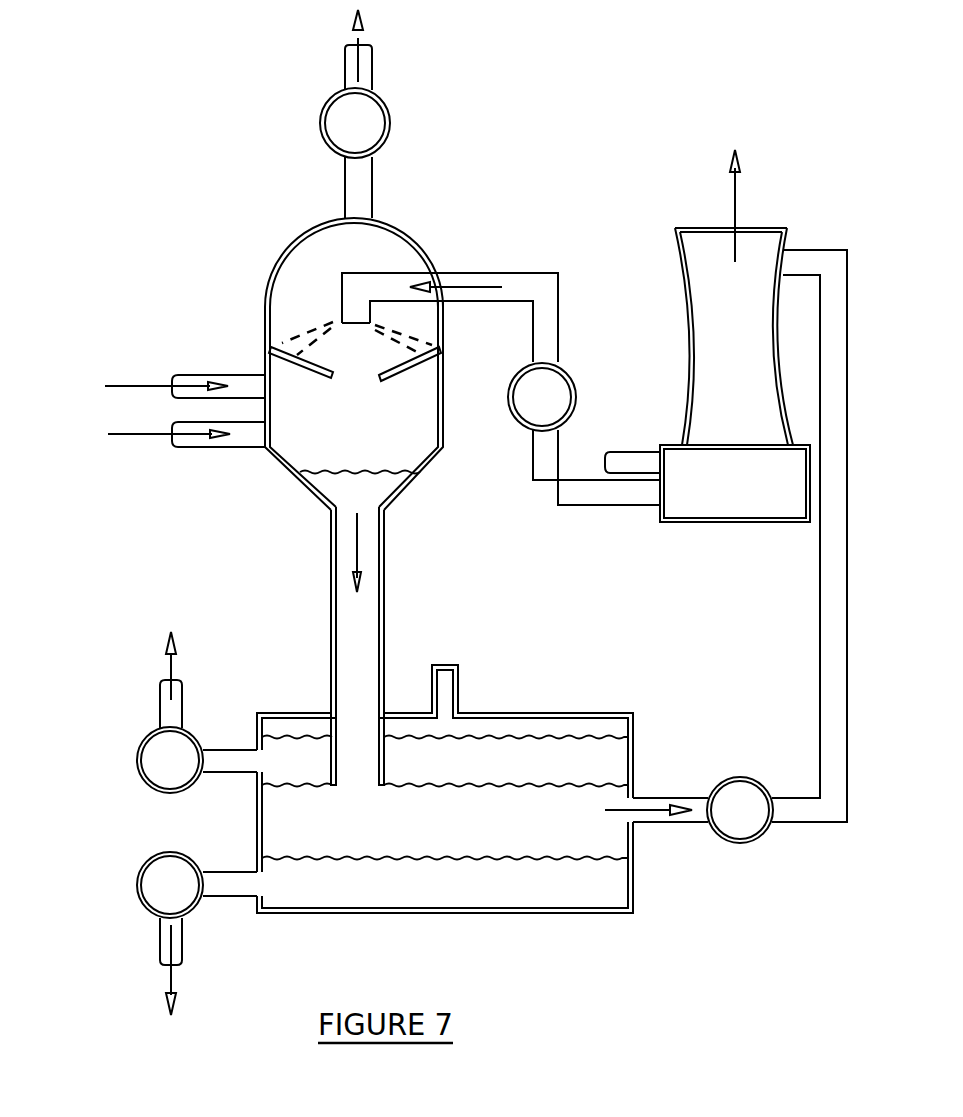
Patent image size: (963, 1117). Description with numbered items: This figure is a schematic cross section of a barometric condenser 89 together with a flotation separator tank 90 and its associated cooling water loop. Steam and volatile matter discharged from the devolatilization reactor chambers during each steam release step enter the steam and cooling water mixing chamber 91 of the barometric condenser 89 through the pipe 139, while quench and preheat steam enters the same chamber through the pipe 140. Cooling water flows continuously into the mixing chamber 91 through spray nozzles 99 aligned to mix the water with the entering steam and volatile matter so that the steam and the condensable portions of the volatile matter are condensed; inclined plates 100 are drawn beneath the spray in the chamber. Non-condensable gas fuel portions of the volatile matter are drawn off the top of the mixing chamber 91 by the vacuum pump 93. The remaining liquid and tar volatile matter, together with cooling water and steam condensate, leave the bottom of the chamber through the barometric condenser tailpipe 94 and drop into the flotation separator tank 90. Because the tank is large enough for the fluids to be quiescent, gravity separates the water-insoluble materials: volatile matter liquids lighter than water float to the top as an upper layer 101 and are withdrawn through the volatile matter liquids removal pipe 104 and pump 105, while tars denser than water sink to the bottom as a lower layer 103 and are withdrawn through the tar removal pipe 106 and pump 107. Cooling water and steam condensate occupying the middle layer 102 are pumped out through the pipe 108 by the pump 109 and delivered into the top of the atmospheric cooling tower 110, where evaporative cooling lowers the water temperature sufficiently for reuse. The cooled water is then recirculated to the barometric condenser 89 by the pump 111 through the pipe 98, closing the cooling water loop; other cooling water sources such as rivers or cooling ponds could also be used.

The barometric condenser 89 is at (432, 457).
The flotation separator tank 90 is at (600, 913).
The steam and cooling water mixing chamber 91 is at (300, 312).
The vacuum pump 93 is at (375, 127).
The barometric condenser tailpipe 94 is at (357, 607).
The pipe 98 is at (450, 290).
The spray nozzle 99 is at (355, 315).
The baffle plates 100 is at (415, 366).
The upper liquid layer 101 is at (527, 757).
The middle layer 102 is at (562, 822).
The lower liquid layer 103 is at (428, 893).
The volatile matter liquids removal pipe 104 is at (225, 752).
The pump 105 is at (152, 738).
The tar removal pipe 106 is at (222, 893).
The pump 107 is at (148, 890).
The pipe 108 is at (695, 818).
The pump 109 is at (748, 822).
The atmospheric cooling tower 110 is at (757, 258).
The pump 111 is at (577, 380).
The pipe 139 is at (208, 377).
The pipe 140 is at (208, 442).